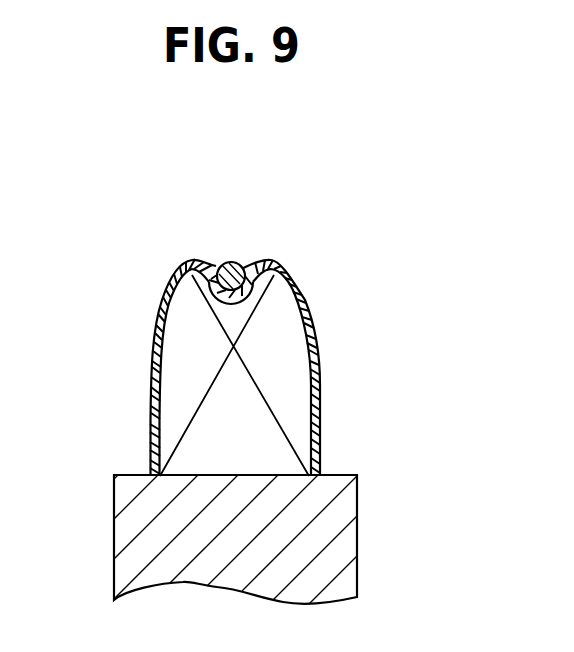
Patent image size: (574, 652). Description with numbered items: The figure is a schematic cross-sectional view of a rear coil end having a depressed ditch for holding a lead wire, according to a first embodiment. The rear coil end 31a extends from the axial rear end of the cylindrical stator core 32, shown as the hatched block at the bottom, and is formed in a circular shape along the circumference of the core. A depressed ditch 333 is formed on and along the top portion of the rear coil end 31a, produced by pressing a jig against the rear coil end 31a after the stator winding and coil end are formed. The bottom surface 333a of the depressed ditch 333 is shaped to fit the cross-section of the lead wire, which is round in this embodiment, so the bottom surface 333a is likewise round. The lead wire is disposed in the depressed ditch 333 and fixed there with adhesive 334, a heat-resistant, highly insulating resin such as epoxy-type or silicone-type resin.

The cylindrical stator core 32 is at (355, 503).
The rear coil end 31a is at (295, 385).
The adhesive 334 is at (182, 266).
The depressed ditch 333 is at (265, 251).
The bottom surface 333a is at (244, 252).